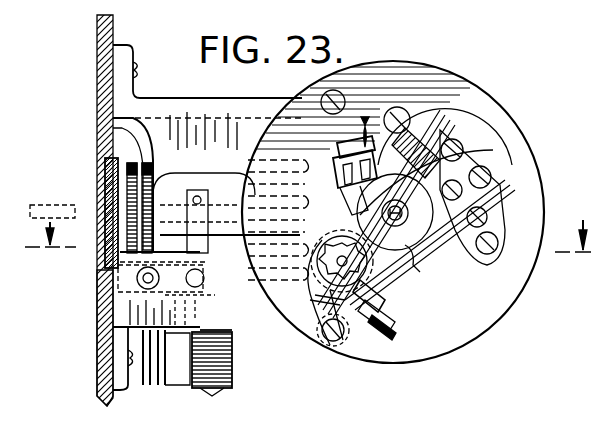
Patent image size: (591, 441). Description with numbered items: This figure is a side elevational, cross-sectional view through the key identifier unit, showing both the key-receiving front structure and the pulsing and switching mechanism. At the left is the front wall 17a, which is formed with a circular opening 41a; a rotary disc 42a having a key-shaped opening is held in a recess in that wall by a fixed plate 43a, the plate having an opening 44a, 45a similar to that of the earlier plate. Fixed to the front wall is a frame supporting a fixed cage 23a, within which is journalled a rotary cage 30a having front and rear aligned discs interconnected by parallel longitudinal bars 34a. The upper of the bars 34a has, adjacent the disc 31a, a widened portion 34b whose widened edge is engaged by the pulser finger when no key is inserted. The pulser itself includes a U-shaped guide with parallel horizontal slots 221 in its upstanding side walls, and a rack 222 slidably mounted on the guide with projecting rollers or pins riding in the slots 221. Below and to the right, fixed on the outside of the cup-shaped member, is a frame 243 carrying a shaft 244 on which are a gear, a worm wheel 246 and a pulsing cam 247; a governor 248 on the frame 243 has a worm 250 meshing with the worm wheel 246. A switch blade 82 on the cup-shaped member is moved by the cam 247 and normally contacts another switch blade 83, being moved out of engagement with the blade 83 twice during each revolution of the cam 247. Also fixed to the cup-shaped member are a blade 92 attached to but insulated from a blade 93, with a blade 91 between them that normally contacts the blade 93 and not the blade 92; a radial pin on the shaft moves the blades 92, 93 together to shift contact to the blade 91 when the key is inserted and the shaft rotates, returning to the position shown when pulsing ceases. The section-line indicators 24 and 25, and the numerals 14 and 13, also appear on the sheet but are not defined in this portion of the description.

The governor 248 is at (369, 115).
The switch blade 82 is at (373, 148).
The switch blade 83 is at (483, 150).
The fixed cage 23a is at (177, 160).
The disc 31a is at (113, 117).
The fixed plate 43a is at (113, 130).
The rotary disc 42a is at (110, 175).
The opening 44a is at (105, 218).
The opening 45a is at (103, 235).
The section line 24 is at (308, 244).
The circular opening 41a is at (97, 268).
The front wall 17a is at (97, 356).
The rotary cage 30a is at (219, 190).
The longitudinal bars 34a is at (247, 150).
The section line 25 is at (493, 220).
The frame 14 is at (584, 95).
The base 13 is at (590, 426).
The shaft 244 is at (318, 340).
The worm wheel 246 is at (330, 350).
The pulsing cam 247 is at (365, 312).
The frame 243 is at (372, 323).
The worm 250 is at (400, 317).
The blade 93 is at (410, 290).
The blade 91 is at (433, 290).
The blade 92 is at (470, 303).
The horizontal slots 221 is at (213, 300).
The rack 222 is at (235, 300).
The widened portion 34b is at (190, 220).